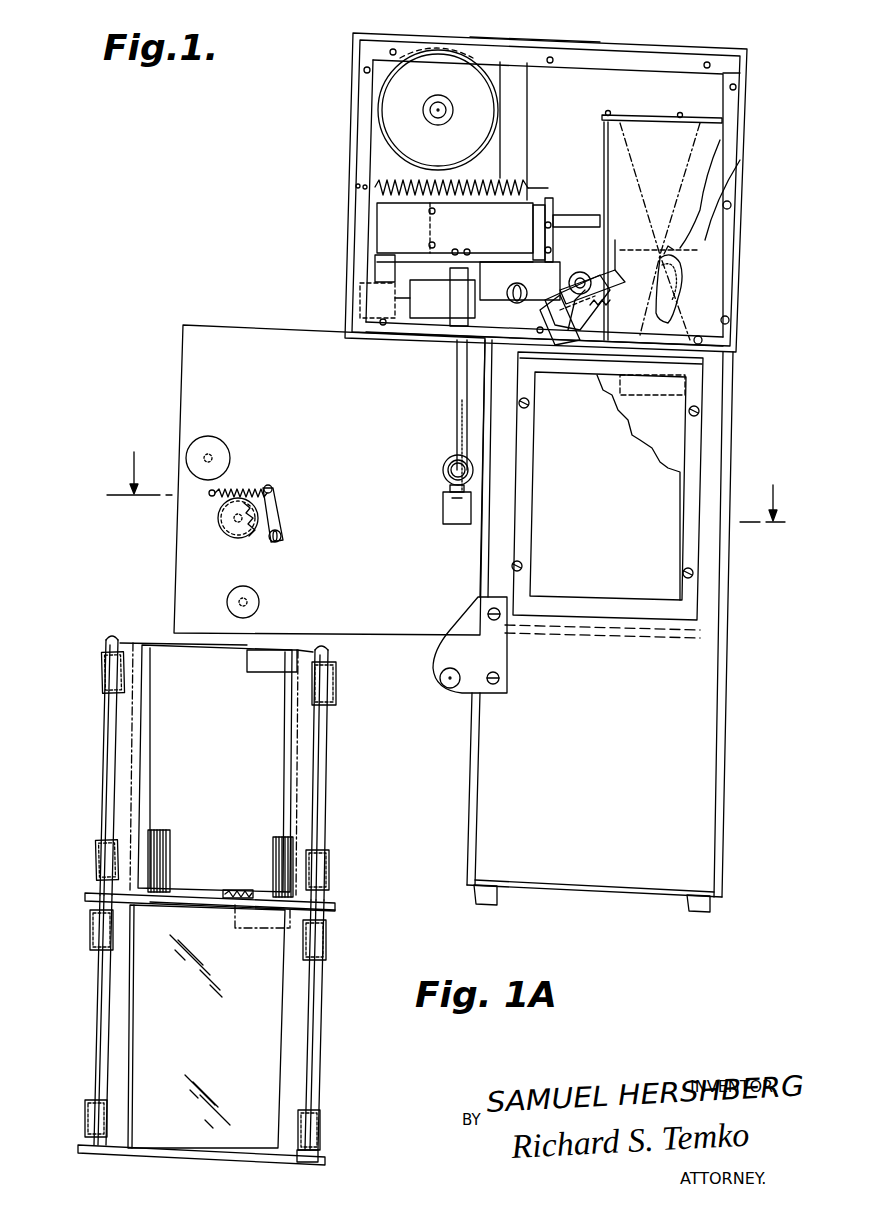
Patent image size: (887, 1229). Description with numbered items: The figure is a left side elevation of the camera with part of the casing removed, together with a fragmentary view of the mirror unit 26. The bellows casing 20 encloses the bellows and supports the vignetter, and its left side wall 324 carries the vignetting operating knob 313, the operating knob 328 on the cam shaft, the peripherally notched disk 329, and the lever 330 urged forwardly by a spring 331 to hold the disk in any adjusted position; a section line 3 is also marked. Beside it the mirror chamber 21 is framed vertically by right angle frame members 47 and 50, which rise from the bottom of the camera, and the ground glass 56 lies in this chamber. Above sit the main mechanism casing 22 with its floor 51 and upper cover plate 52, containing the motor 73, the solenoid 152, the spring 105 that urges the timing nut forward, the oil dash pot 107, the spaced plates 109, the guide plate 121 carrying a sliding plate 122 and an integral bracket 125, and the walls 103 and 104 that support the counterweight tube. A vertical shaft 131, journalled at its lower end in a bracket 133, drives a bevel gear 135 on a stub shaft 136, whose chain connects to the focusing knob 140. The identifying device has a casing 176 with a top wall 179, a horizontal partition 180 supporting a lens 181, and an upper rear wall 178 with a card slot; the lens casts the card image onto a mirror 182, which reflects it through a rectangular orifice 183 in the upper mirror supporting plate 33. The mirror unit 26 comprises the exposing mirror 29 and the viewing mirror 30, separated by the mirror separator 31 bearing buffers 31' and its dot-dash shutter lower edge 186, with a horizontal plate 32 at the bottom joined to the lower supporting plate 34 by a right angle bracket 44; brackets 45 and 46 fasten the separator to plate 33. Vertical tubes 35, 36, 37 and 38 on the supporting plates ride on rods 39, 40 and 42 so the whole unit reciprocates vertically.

In FIG. 1, the bellows casing 20 is at (215, 372).
In FIG. 1, the mirror chamber 21 is at (690, 718).
In FIG. 1, the main mechanism casing 22 is at (685, 105).
In FIG. 1, the section line 3 is at (446, 475).
In FIG. 1A, the mirror unit 26 is at (255, 830).
In FIG. 1A, the exposing mirror 29 is at (262, 745).
In FIG. 1A, the viewing mirror 30 is at (255, 1022).
In FIG. 1A, the mirror separator 31 is at (234, 904).
In FIG. 1A, the buffers 31' is at (235, 880).
In FIG. 1, the horizontal plate 32 is at (705, 631).
In FIG. 1A, the horizontal plate 32 is at (320, 1160).
In FIG. 1A, the upper mirror supporting plate 33 is at (262, 780).
In FIG. 1A, the lower mirror supporting plate 34 is at (115, 1060).
In FIG. 1A, the vertical tube 35 is at (100, 672).
In FIG. 1A, the vertical tube 36 is at (336, 681).
In FIG. 1A, the vertical tube 37 is at (90, 922).
In FIG. 1A, the vertical tube 38 is at (326, 940).
In FIG. 1A, the vertical rod 39 is at (105, 772).
In FIG. 1A, the vertical rod 40 is at (319, 812).
In FIG. 1A, the vertical rod 42 is at (310, 1065).
In FIG. 1A, the right angle bracket 44 is at (315, 1152).
In FIG. 1A, the right angle bracket 45 is at (272, 857).
In FIG. 1A, the right angle bracket 46 is at (160, 852).
In FIG. 1, the right angle frame member 47 is at (493, 898).
In FIG. 1, the right angle frame member 50 is at (695, 912).
In FIG. 1, the floor 51 is at (392, 340).
In FIG. 1, the upper cover plate 52 is at (548, 38).
In FIG. 1, the ground glass 56 is at (650, 588).
In FIG. 1, the motor 73 is at (383, 103).
In FIG. 1, the wall 103 is at (372, 187).
In FIG. 1, the wall 104 is at (468, 805).
In FIG. 1, the spring 105 is at (536, 195).
In FIG. 1, the oil dash pot 107 is at (385, 298).
In FIG. 1, the rectangular plates 109 is at (396, 232).
In FIG. 1, the guide plate 121 is at (616, 215).
In FIG. 1, the plate 122 is at (605, 262).
In FIG. 1, the bracket 125 is at (572, 345).
In FIG. 1, the vertical shaft 131 is at (457, 380).
In FIG. 1, the bracket 133 is at (440, 522).
In FIG. 1, the bevel gear 135 is at (442, 472).
In FIG. 1, the stub shaft 136 is at (445, 462).
In FIG. 1, the focusing knob 140 is at (200, 456).
In FIG. 1, the solenoid 152 is at (470, 250).
In FIG. 1, the casing 176 is at (617, 150).
In FIG. 1, the upper rear wall 178 is at (735, 278).
In FIG. 1, the top wall 179 is at (660, 115).
In FIG. 1, the horizontal partition 180 is at (690, 250).
In FIG. 1, the lens 181 is at (705, 230).
In FIG. 1, the mirror 182 is at (690, 383).
In FIG. 1A, the rectangular orifice 183 is at (255, 660).
In FIG. 1A, the lower edge 186 is at (150, 905).
In FIG. 1, the operating knob 313 is at (258, 603).
In FIG. 1, the left side wall 324 is at (185, 565).
In FIG. 1, the operating knob 328 is at (222, 515).
In FIG. 1, the peripherally notched disk 329 is at (266, 525).
In FIG. 1, the lever 330 is at (272, 505).
In FIG. 1, the spring 331 is at (250, 492).